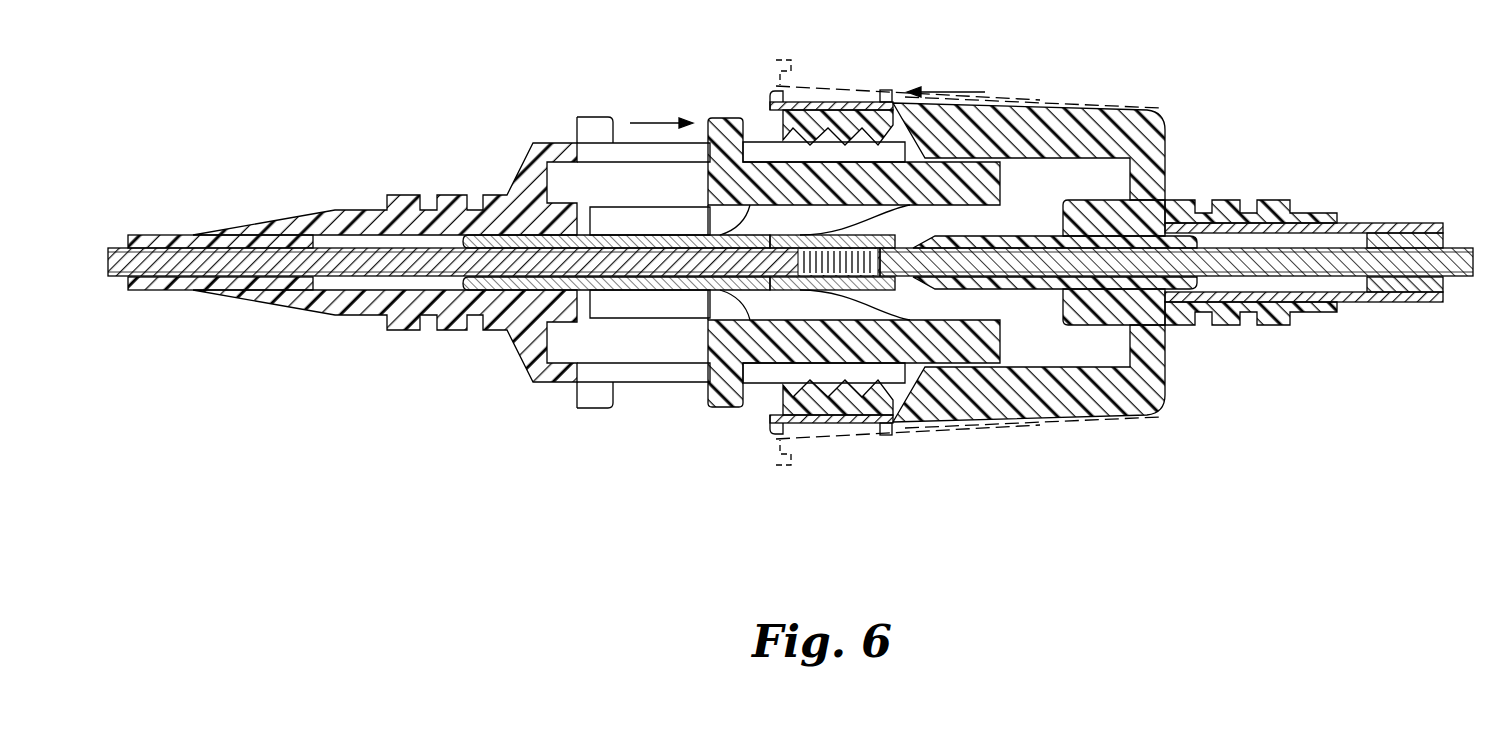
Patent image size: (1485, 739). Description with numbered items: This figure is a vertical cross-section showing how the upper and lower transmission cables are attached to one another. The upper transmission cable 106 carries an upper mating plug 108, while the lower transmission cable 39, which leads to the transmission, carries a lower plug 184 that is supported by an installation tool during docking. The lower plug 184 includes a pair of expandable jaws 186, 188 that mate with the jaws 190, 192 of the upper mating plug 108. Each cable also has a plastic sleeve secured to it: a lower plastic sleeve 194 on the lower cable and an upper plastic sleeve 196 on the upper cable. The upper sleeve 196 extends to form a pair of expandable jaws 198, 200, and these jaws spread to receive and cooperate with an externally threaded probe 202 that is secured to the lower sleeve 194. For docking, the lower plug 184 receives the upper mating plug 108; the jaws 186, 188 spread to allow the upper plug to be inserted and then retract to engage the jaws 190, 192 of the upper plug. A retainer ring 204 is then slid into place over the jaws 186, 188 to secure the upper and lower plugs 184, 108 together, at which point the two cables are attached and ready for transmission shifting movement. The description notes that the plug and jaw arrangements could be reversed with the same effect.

The lower transmission cable 39 is at (1457, 250).
The upper transmission cable 106 is at (110, 250).
The upper mating plug 108 is at (522, 182).
The upper plastic sleeve 196 is at (507, 330).
The expandable jaw 186 is at (768, 110).
The expandable jaw 188 is at (766, 415).
The jaw 190 is at (822, 103).
The jaw 192 is at (850, 395).
The retainer ring 204 is at (857, 100).
The expandable jaw 198 is at (915, 232).
The expandable jaw 200 is at (935, 170).
The externally threaded probe 202 is at (930, 375).
The lower plug 184 is at (1137, 108).
The lower plastic sleeve 194 is at (1190, 318).